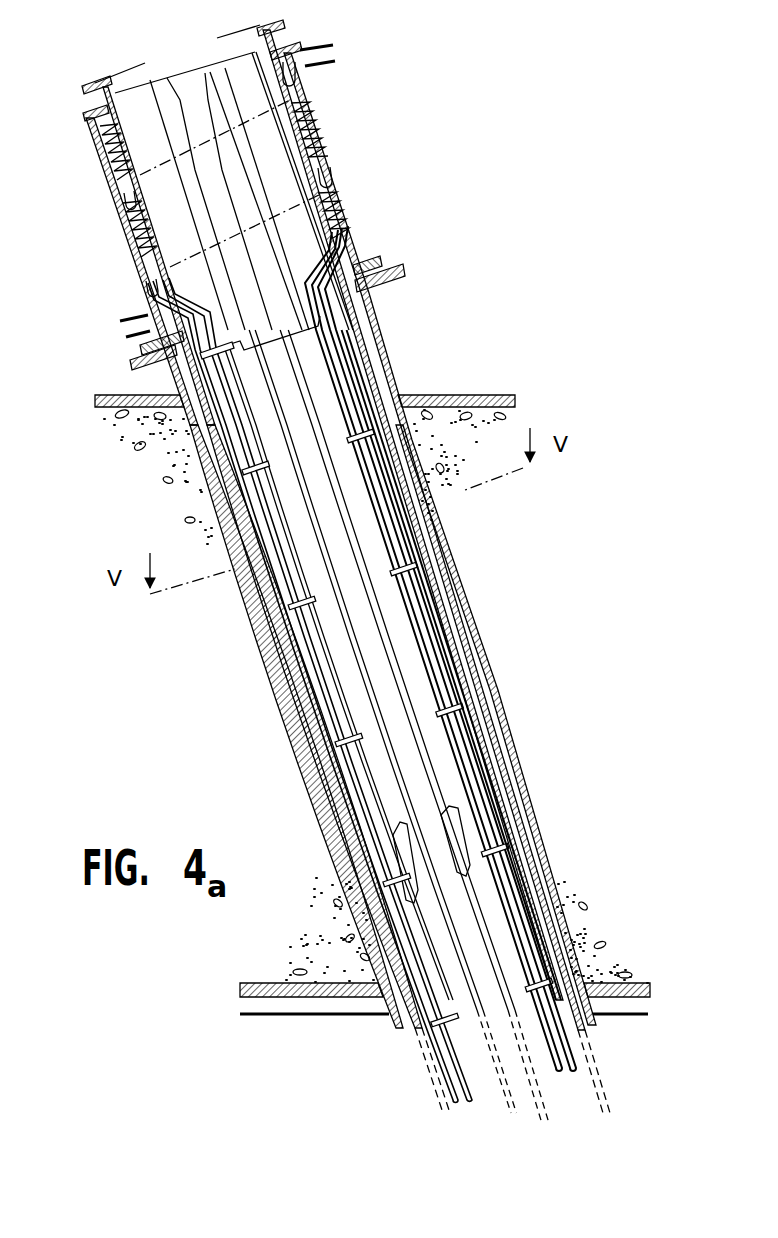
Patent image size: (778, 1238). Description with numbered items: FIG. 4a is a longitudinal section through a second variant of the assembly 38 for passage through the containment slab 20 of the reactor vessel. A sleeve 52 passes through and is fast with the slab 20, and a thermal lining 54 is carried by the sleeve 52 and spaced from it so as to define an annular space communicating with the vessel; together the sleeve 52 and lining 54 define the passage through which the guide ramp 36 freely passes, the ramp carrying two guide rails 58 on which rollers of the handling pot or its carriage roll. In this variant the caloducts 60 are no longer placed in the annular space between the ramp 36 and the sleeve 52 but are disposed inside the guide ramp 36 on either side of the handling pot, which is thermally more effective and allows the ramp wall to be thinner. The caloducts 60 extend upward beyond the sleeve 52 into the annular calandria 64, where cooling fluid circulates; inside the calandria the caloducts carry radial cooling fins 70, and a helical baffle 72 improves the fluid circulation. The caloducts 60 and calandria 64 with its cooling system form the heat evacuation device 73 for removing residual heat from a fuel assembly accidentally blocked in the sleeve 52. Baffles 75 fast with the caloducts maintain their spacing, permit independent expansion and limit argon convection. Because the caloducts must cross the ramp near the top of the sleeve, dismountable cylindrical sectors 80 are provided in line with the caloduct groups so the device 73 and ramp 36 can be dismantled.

The containment slab 20 is at (605, 729).
The guide ramp 36 is at (449, 648).
The assembly for passage through the containment slab 38 is at (425, 333).
The sleeve 52 is at (267, 672).
The thermal lining 54 is at (315, 763).
The guide rails 58 is at (500, 1052).
The caloducts 60 is at (478, 826).
The annular calandria 64 is at (323, 112).
The radial cooling fins 70 is at (352, 212).
The helical baffle 72 is at (322, 185).
The heat evacuation device 73 is at (116, 271).
The baffles 75 is at (394, 571).
The dismountable cylindrical sectors 80 is at (242, 70).